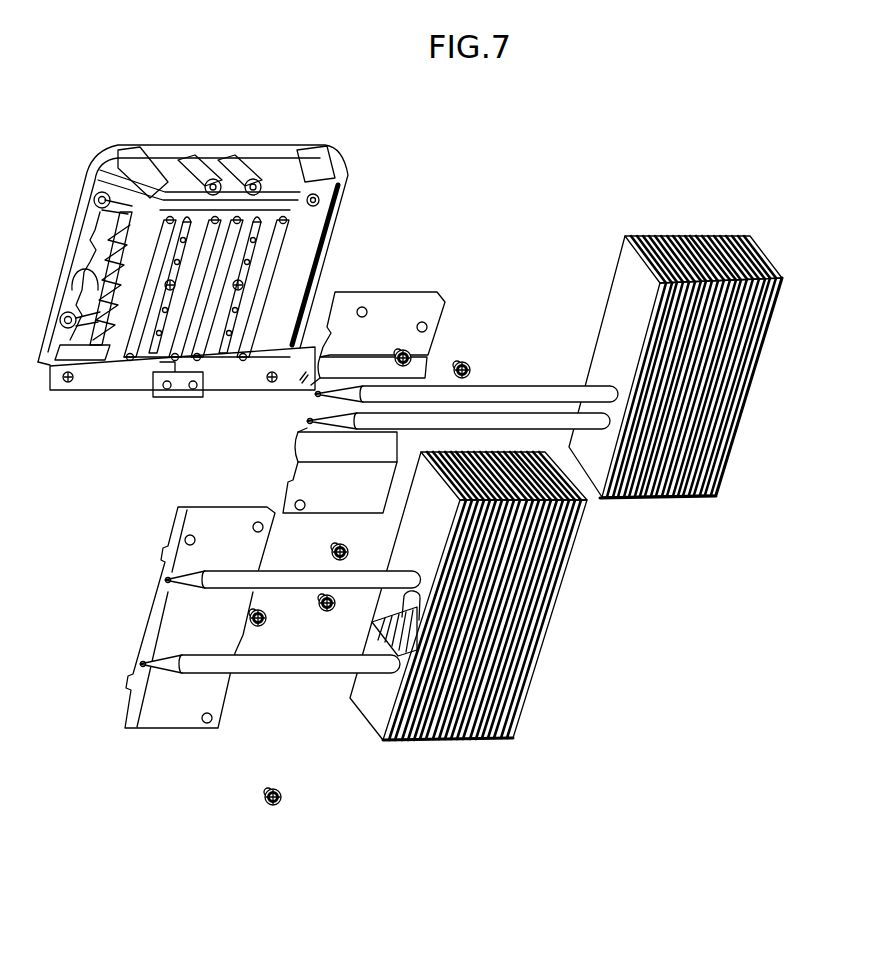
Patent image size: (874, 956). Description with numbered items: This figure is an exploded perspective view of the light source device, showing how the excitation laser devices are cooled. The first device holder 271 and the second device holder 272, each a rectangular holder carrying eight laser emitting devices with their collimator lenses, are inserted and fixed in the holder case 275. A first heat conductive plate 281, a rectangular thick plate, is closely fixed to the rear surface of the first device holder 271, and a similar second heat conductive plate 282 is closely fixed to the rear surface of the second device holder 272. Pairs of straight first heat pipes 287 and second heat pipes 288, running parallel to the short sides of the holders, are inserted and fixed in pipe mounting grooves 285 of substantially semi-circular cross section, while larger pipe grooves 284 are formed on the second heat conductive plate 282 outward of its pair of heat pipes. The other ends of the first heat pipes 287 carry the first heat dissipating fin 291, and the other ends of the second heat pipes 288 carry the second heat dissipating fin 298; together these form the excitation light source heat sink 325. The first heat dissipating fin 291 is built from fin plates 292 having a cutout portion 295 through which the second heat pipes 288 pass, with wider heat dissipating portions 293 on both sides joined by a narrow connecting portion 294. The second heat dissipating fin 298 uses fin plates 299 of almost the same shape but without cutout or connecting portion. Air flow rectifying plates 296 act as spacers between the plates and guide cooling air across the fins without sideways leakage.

The first device holder 271 is at (187, 217).
The second device holder 272 is at (263, 213).
The holder case 275 is at (189, 239).
The first heat conductive plate 281 is at (207, 523).
The second heat conductive plate 282 is at (331, 370).
The pipe grooves 284 is at (377, 365).
The pipe mounting grooves 285 is at (312, 421).
The first heat pipes 287 is at (262, 667).
The second heat pipes 288 is at (547, 418).
The first heat dissipating fin 291 is at (458, 634).
The fin plates 292 is at (458, 634).
The heat dissipating portions 293 is at (430, 540).
The connecting portion 294 is at (418, 638).
The cutout portion 295 is at (405, 605).
The air flow rectifying plates 296 is at (783, 277).
The second heat dissipating fin 298 is at (706, 359).
The fin plates 299 is at (630, 272).
The excitation light source heat sink 325 is at (460, 478).